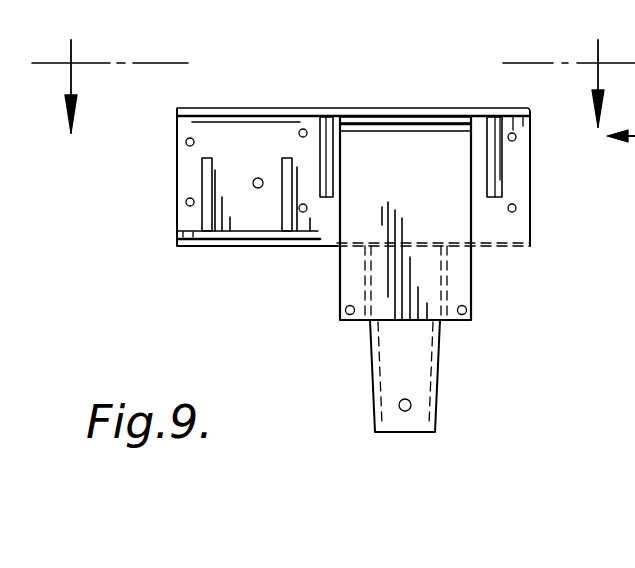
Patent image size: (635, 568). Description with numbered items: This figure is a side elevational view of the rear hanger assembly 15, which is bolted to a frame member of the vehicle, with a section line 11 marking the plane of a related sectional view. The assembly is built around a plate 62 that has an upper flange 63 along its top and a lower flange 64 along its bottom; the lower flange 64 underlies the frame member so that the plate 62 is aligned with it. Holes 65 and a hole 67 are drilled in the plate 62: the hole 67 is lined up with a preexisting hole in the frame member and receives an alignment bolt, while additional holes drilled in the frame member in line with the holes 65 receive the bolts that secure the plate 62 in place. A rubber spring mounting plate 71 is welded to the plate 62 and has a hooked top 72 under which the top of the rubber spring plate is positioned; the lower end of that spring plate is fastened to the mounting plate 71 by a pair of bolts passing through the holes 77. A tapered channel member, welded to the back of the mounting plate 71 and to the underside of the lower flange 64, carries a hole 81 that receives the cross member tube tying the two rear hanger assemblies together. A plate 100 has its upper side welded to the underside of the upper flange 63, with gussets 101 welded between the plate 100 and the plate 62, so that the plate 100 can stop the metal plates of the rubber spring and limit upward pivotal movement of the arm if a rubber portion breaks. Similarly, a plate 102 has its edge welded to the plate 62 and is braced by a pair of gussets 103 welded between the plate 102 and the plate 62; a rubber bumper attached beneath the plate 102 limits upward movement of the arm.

The section line 11 is at (331, 87).
The rear hanger assembly 15 is at (273, 88).
The plate 62 is at (520, 173).
The upper flange 63 is at (395, 84).
The lower flange 64 is at (490, 250).
The holes 65 is at (186, 142).
The hole 67 is at (258, 179).
The rubber spring mounting plate 71 is at (353, 253).
The hooked top 72 is at (404, 124).
The holes 77 is at (350, 315).
The hole 81 is at (405, 411).
The plate 100 is at (438, 117).
The gussets 101 is at (488, 157).
The plate 102 is at (230, 240).
The gussets 103 is at (297, 205).